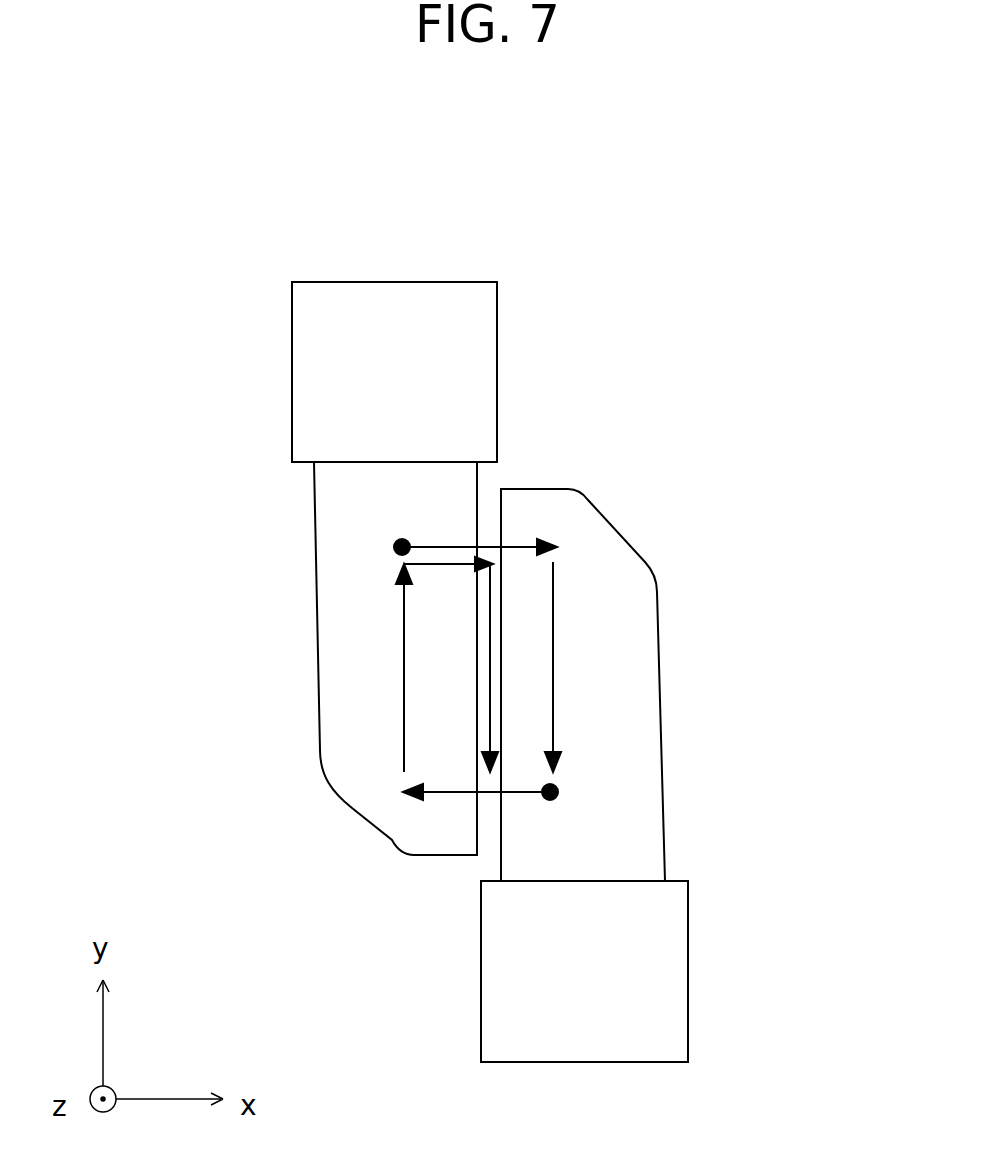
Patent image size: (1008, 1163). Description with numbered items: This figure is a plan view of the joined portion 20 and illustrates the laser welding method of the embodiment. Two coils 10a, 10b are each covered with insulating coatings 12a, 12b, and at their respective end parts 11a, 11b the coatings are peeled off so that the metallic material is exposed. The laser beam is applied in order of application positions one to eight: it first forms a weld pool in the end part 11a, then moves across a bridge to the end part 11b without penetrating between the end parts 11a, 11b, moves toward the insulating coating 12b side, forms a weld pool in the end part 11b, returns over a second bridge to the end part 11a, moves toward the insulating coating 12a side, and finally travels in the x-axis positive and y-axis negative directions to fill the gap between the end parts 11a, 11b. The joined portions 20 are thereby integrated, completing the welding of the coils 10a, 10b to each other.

The coil 10a is at (276, 198).
The coil 10b is at (768, 657).
The end part 11a is at (314, 556).
The end part 11b is at (622, 530).
The insulating coating 12a is at (291, 362).
The insulating coating 12b is at (688, 978).
The joined portion 20 is at (560, 408).